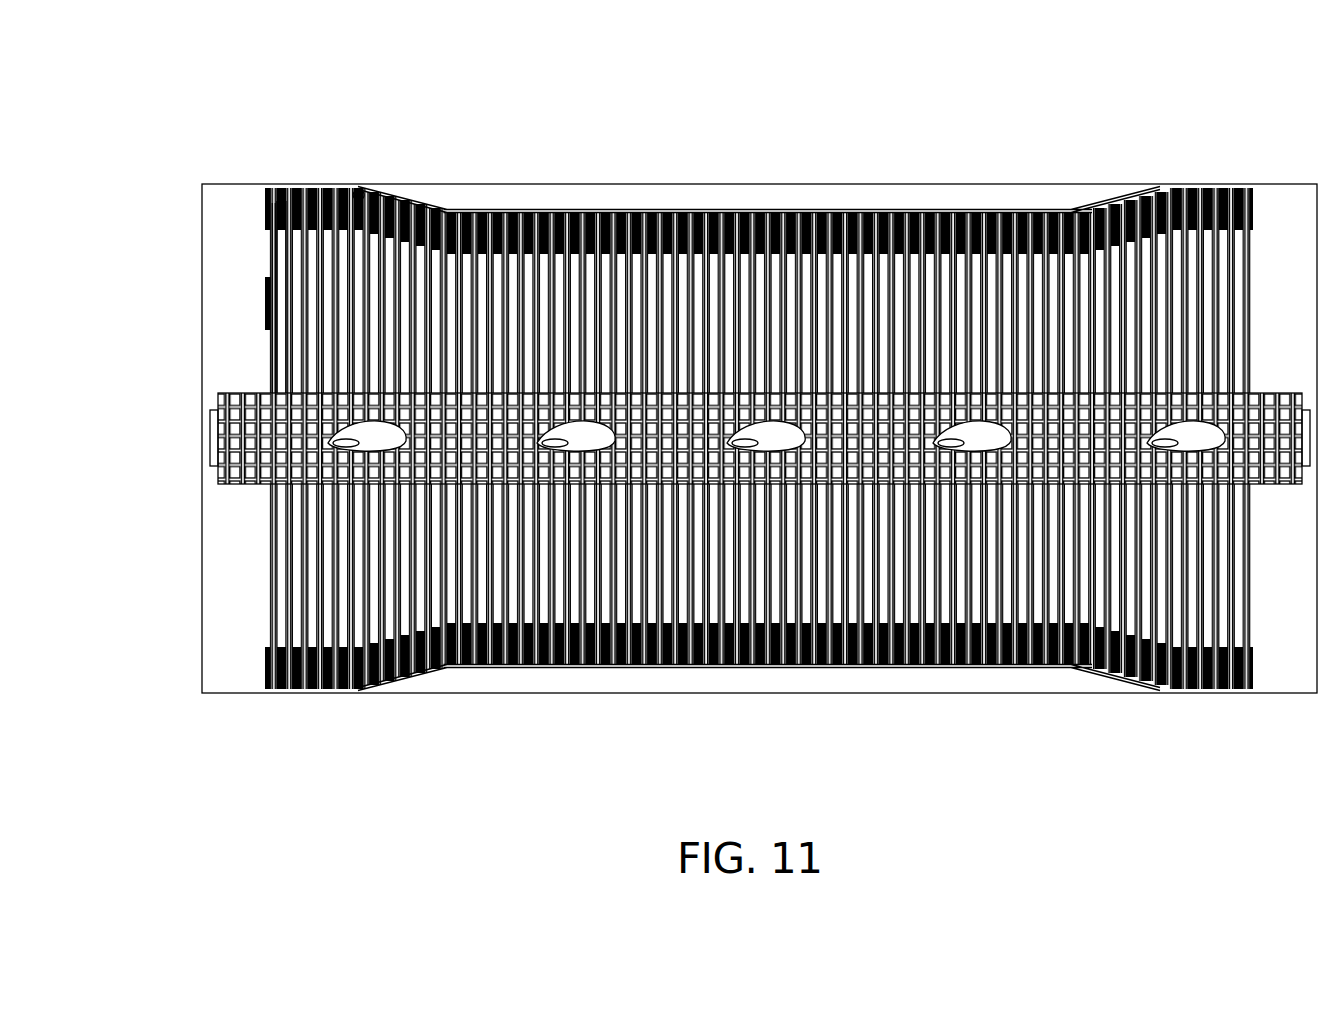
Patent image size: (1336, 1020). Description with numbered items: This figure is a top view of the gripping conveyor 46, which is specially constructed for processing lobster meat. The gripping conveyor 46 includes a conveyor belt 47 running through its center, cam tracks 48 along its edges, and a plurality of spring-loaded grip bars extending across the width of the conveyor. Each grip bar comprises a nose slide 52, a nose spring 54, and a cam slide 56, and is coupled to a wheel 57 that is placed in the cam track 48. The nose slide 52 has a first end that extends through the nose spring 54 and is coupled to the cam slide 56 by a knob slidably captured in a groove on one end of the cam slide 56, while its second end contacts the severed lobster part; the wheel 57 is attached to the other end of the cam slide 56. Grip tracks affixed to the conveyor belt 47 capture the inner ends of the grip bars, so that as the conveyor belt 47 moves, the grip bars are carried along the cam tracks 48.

The gripping conveyor 46 is at (230, 121).
The conveyor belt 47 is at (222, 437).
The cam tracks 48 is at (984, 200).
The nose slide 52 is at (272, 340).
The nose spring 54 is at (272, 285).
The cam slide 56 is at (272, 213).
The wheel 57 is at (356, 188).